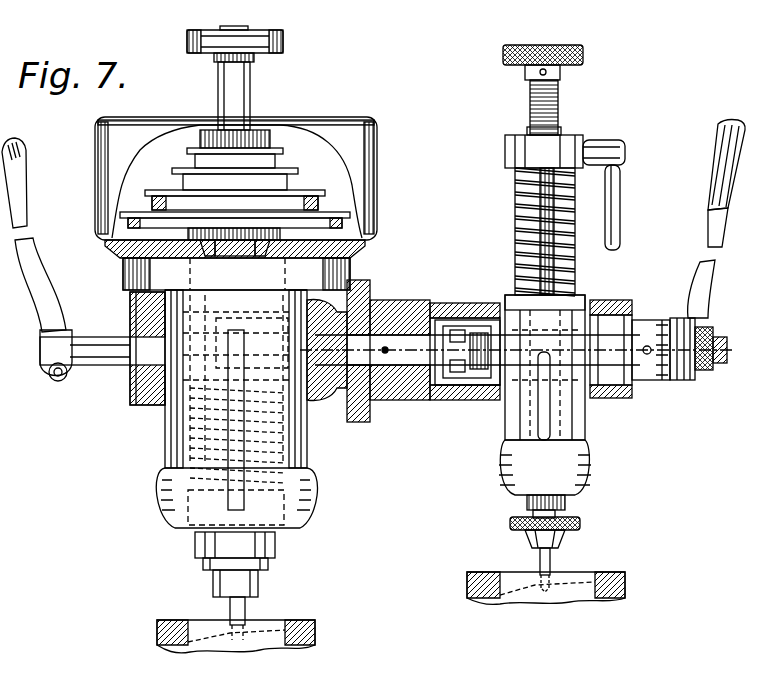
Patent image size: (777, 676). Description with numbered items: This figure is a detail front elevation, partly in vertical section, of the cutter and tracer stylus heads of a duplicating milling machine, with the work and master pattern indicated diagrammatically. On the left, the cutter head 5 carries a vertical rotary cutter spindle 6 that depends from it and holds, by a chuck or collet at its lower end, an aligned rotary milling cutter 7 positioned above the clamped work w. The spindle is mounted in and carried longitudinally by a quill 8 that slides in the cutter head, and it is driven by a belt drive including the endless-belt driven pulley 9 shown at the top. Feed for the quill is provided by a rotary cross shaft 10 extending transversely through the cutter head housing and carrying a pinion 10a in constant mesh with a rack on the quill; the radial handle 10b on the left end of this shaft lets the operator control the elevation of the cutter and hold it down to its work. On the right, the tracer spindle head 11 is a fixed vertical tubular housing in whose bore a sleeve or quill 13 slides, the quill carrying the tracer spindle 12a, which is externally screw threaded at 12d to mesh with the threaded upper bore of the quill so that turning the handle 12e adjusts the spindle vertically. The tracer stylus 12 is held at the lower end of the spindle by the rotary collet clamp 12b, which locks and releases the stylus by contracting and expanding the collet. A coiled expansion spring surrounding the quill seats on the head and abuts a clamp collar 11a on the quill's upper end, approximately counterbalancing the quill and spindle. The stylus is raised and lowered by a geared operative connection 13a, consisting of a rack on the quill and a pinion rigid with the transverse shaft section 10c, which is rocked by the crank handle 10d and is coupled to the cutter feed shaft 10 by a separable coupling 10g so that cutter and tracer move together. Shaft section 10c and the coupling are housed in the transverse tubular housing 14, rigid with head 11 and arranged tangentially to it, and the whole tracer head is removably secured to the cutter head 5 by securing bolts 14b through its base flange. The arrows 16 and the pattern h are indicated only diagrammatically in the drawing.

The cutter head 5 is at (165, 428).
The rotary cutter spindle 6 is at (258, 588).
The rotary milling cutter 7 is at (230, 608).
The quill 8 is at (272, 566).
The belt driven pulley 9 is at (325, 196).
The rotary cross shaft 10 is at (112, 360).
The pinion 10a is at (236, 274).
The radial handle 10b is at (32, 280).
The transverse shaft section 10c is at (620, 398).
The crank handle 10d is at (716, 170).
The separable coupling 10g is at (470, 395).
The tracer spindle head 11 is at (515, 200).
The clamp collar 11a is at (505, 145).
The tracer stylus 12 is at (552, 562).
The tracer spindle 12a is at (558, 106).
The rotary collet clamp 12b is at (582, 522).
The spindle screw thread 12d is at (560, 122).
The handle 12e is at (585, 55).
The sleeve or quill 13 is at (578, 245).
The geared operative connection 13a is at (490, 305).
The transverse tubular housing 14 is at (385, 312).
The securing bolts 14b is at (370, 405).
The direction arrow 16 is at (528, 33).
The work w is at (316, 634).
The work piece h is at (490, 598).